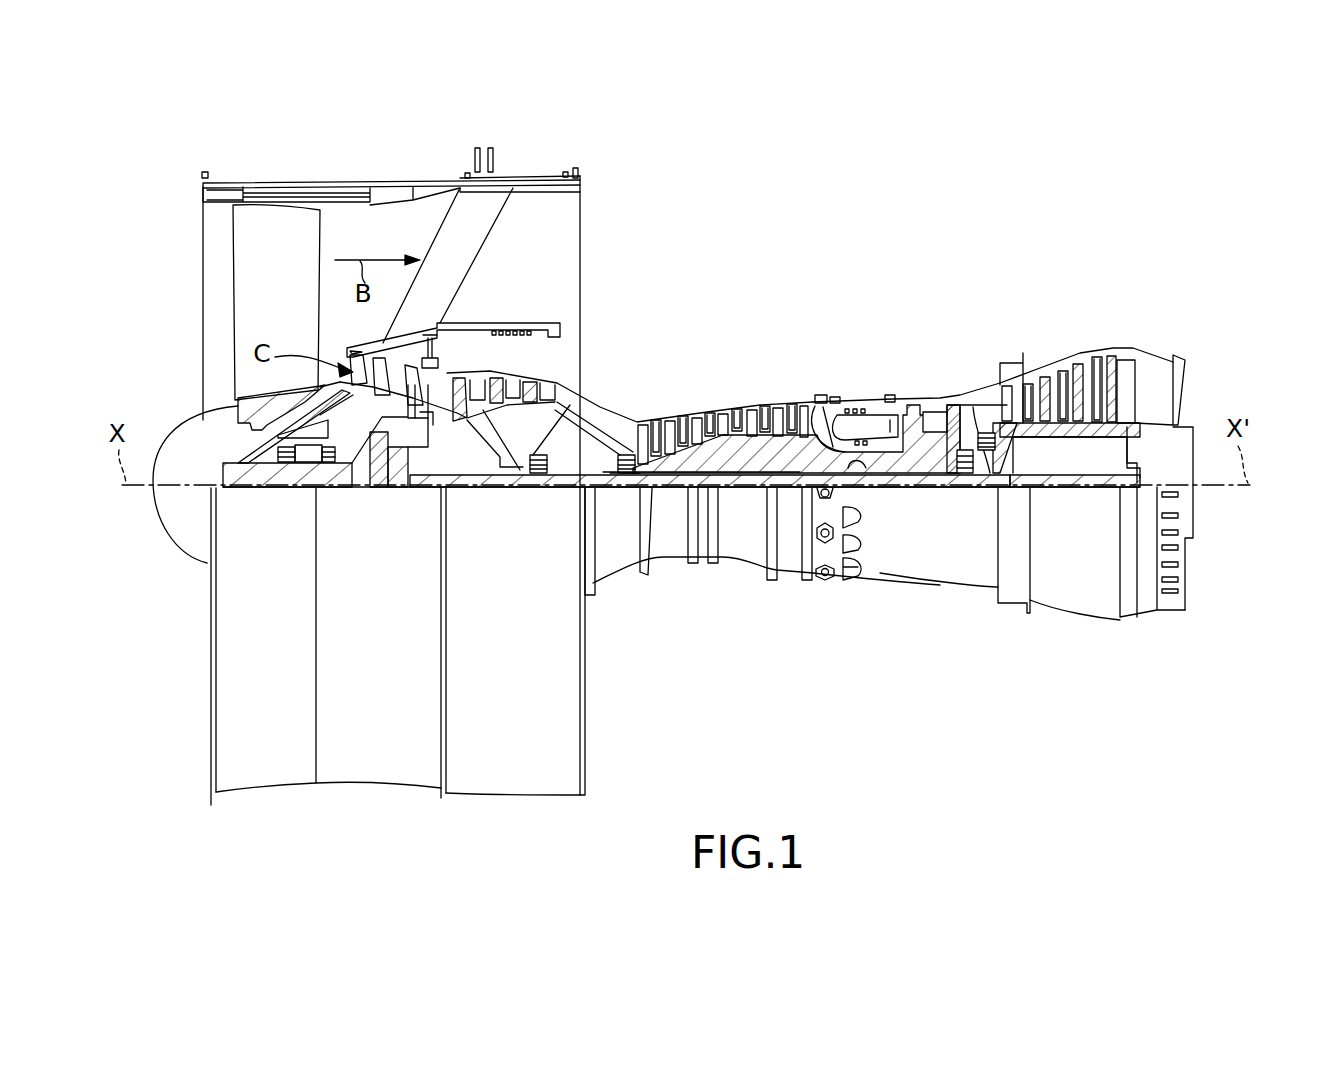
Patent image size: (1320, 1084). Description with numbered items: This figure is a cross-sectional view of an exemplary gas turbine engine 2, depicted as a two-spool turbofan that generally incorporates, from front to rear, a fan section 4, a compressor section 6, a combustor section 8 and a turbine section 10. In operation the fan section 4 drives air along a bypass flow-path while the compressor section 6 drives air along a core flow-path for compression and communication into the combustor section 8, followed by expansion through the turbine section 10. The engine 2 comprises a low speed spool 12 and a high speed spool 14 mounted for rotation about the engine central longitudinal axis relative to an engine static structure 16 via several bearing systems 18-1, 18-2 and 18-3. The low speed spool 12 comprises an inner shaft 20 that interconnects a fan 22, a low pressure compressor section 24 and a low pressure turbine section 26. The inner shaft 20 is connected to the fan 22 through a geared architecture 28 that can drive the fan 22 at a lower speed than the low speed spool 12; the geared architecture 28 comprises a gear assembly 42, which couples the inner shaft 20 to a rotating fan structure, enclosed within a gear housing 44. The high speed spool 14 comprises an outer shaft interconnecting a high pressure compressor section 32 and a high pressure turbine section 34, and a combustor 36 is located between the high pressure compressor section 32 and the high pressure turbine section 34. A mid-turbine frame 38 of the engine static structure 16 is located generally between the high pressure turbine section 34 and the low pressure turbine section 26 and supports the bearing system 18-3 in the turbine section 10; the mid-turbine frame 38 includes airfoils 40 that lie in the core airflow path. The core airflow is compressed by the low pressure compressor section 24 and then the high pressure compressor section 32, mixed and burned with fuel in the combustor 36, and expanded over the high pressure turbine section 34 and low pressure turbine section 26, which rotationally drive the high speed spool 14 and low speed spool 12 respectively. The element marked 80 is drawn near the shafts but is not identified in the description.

The gas turbine engine 2 is at (908, 216).
The fan section 4 is at (433, 157).
The compressor section 6 is at (443, 291).
The combustor section 8 is at (915, 291).
The turbine section 10 is at (1123, 291).
The low speed spool 12 is at (750, 488).
The high speed spool 14 is at (787, 450).
The engine static structure 16 is at (375, 767).
The bearing system 18-1 is at (290, 466).
The bearing system 18-2 is at (542, 475).
The bearing system 18-3 is at (975, 480).
The inner shaft 20 is at (603, 484).
The fan 22 is at (287, 304).
The low pressure compressor section 24 is at (517, 387).
The low pressure turbine section 26 is at (1058, 372).
The geared architecture 28 is at (403, 495).
The high pressure compressor section 32 is at (728, 452).
The high pressure turbine section 34 is at (932, 400).
The combustor 36 is at (860, 422).
The mid-turbine frame 38 is at (975, 417).
The airfoils 40 is at (987, 410).
The gear assembly 42 is at (412, 470).
The gear housing 44 is at (407, 442).
The oil passage 80 is at (859, 466).